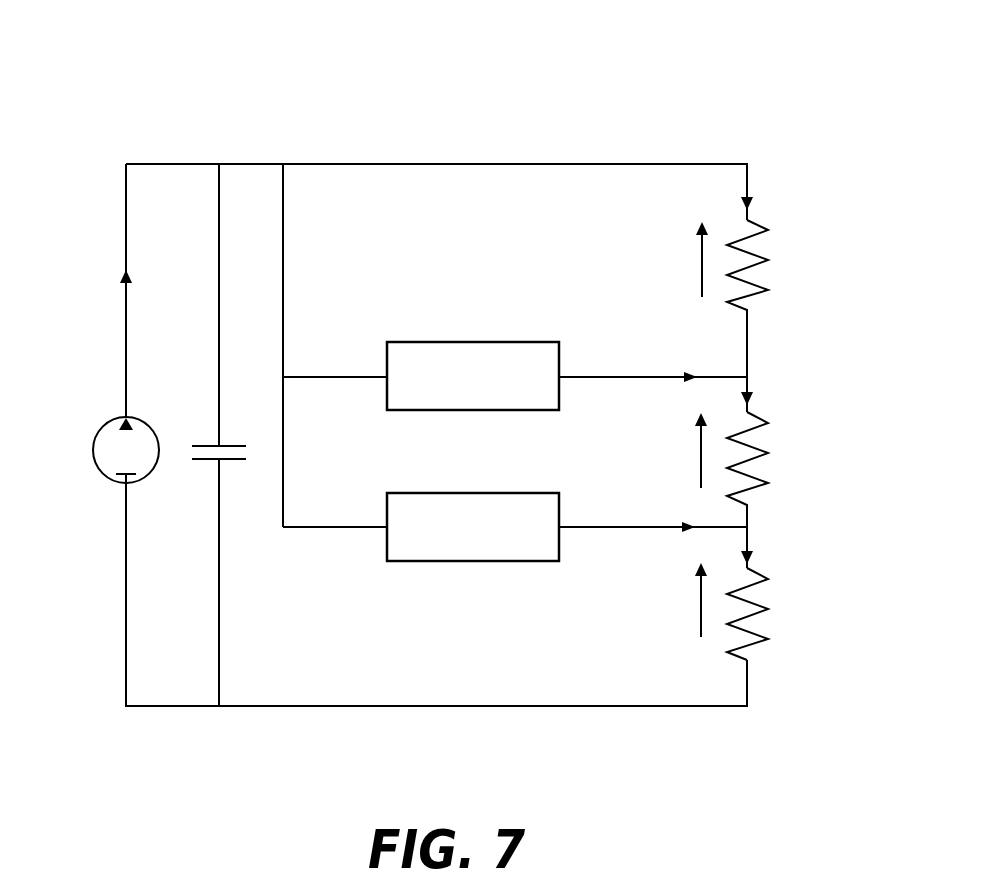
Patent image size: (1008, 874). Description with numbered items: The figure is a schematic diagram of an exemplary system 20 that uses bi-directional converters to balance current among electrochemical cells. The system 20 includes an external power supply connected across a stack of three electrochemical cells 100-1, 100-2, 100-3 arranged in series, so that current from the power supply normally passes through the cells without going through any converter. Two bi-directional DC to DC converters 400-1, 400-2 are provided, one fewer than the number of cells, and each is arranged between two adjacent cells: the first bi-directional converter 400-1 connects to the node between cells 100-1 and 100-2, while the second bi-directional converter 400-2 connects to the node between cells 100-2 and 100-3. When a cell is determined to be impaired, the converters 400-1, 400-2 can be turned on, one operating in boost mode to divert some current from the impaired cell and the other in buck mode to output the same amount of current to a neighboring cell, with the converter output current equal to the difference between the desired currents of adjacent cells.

The system 20 is at (126, 88).
The bi-directional converter 400-1 is at (433, 342).
The bi-directional converter 400-2 is at (433, 493).
The electrochemical cell 100-1 is at (807, 316).
The electrochemical cell 100-2 is at (813, 490).
The electrochemical cell 100-3 is at (813, 614).